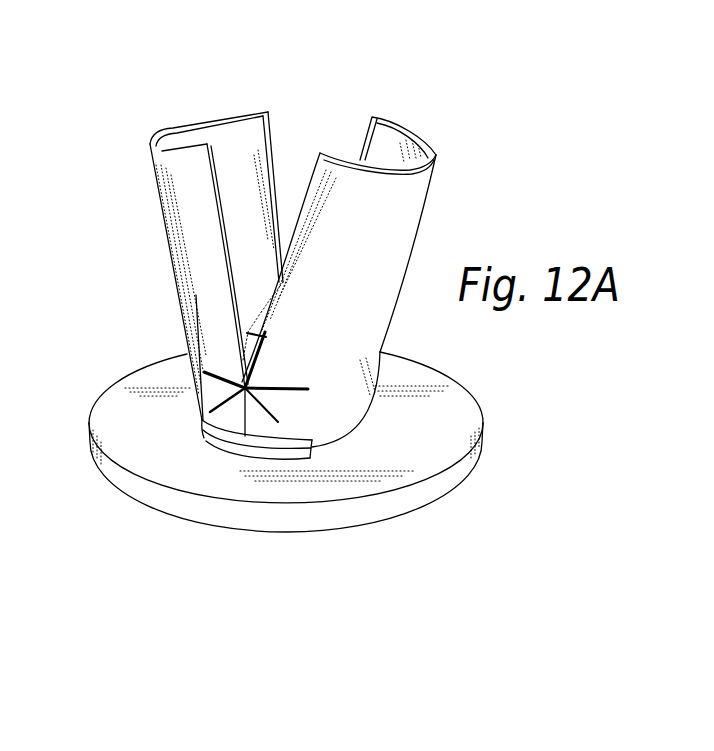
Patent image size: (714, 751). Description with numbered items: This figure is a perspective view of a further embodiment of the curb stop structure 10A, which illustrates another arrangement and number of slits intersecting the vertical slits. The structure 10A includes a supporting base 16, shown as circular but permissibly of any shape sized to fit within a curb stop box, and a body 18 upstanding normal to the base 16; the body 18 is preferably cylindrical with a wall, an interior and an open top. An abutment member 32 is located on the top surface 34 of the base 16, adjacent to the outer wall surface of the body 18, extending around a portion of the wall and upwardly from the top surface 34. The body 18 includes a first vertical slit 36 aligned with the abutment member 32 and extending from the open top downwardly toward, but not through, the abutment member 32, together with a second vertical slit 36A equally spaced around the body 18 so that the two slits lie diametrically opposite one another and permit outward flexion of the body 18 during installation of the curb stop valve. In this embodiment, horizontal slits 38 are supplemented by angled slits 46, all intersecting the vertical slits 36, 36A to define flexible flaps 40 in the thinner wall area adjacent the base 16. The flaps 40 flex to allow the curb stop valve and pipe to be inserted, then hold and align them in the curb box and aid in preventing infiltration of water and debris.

The curb stop structure 10A is at (449, 106).
The supporting base 16 is at (443, 408).
The top surface 34 is at (425, 454).
The body 18 is at (390, 243).
The vertical slit 36 is at (222, 262).
The second vertical slit 36A is at (275, 130).
The horizontal slit 38 is at (218, 370).
The angled slit 46 is at (225, 395).
The abutment member 32 is at (202, 440).
The flexible flap 40 is at (262, 378).